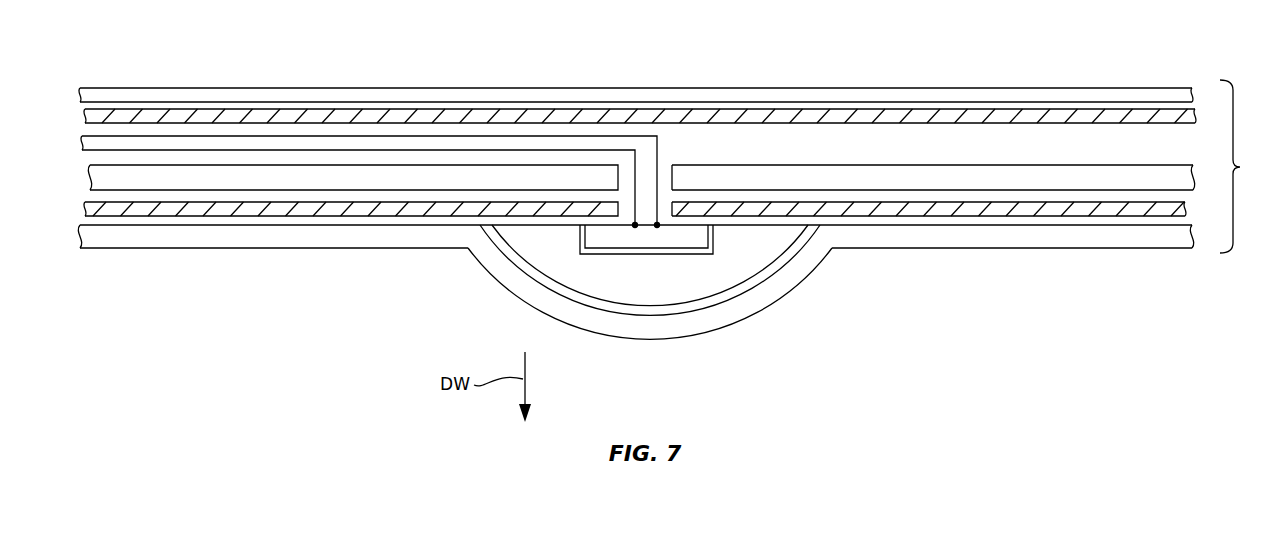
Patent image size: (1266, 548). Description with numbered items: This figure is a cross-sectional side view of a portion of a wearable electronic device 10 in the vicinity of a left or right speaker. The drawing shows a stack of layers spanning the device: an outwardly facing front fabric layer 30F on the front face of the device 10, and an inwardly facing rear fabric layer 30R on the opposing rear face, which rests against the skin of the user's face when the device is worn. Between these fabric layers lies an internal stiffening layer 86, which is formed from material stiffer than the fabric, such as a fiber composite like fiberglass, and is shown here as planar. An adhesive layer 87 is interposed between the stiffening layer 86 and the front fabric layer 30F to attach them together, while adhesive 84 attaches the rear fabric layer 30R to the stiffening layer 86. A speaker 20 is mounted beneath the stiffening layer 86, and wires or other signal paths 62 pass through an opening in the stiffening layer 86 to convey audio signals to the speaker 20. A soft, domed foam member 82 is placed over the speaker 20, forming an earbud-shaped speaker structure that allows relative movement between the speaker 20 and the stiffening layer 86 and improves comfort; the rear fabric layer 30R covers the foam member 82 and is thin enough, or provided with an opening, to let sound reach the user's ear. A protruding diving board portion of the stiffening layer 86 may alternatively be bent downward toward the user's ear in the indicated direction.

The device 10 is at (1242, 166).
The speaker 20 is at (640, 240).
The front fabric layer 30F is at (271, 95).
The rear fabric layer 30R is at (243, 237).
The signal paths 62 is at (360, 136).
The foam member 82 is at (727, 272).
The adhesive 84 is at (180, 212).
The internal stiffening layer 86 is at (1018, 173).
The adhesive layer 87 is at (193, 109).